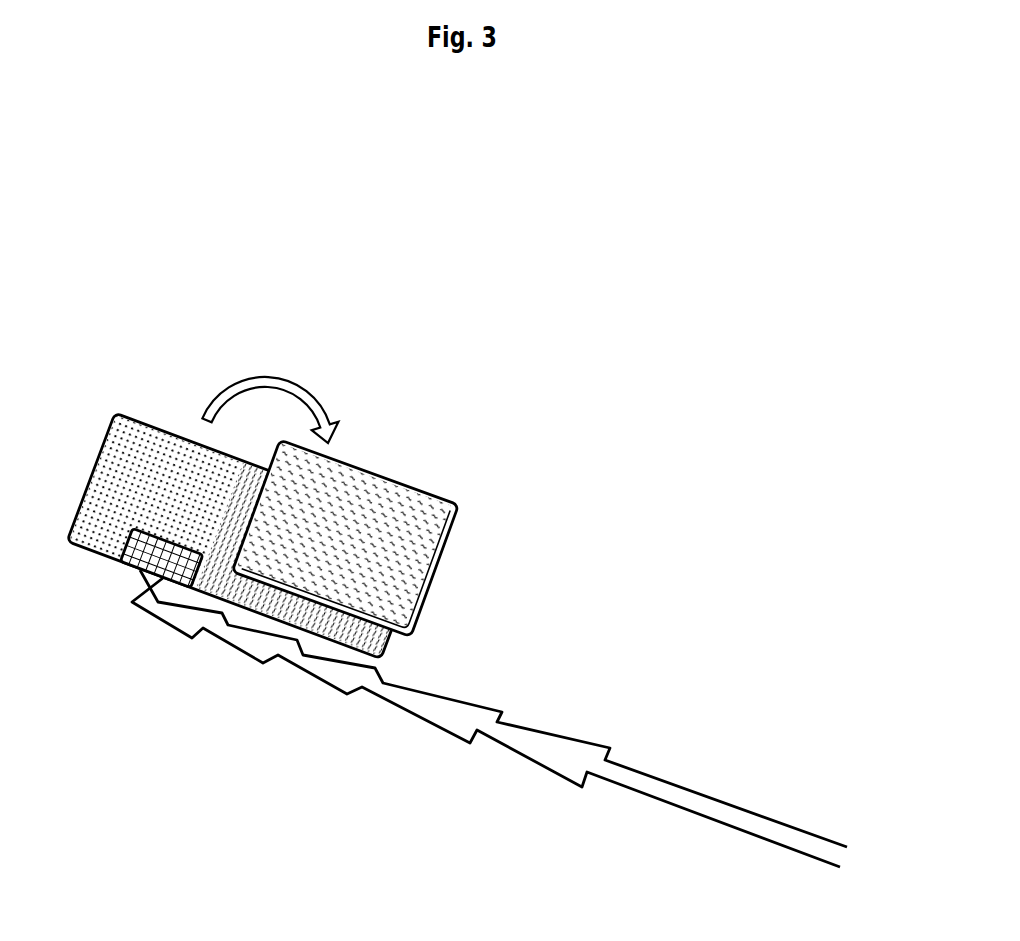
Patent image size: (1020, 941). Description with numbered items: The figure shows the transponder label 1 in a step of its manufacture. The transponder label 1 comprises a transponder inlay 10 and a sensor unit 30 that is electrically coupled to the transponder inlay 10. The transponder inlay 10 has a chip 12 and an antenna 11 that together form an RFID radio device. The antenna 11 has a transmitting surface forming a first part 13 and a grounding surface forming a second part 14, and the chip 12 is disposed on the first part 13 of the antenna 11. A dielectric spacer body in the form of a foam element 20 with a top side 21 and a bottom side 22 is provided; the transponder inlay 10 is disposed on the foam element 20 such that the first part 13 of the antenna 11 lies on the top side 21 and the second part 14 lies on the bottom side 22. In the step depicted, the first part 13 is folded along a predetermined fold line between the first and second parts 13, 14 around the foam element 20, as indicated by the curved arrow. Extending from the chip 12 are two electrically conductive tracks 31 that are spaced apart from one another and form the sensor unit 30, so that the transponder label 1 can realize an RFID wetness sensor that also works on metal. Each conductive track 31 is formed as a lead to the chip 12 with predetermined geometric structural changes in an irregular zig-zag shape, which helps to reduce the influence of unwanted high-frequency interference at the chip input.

The transponder label 1 is at (642, 297).
The transponder inlay 10 is at (229, 347).
The antenna 11 is at (165, 405).
The chip 12 is at (161, 558).
The first part of the antenna 13 is at (157, 502).
The second part of the antenna 14 is at (311, 559).
The foam element 20 is at (376, 487).
The top side of the foam element 21 is at (344, 536).
The bottom side of the foam element 22 is at (423, 512).
The sensor unit 30 is at (778, 710).
The conductive tracks 31 is at (388, 703).